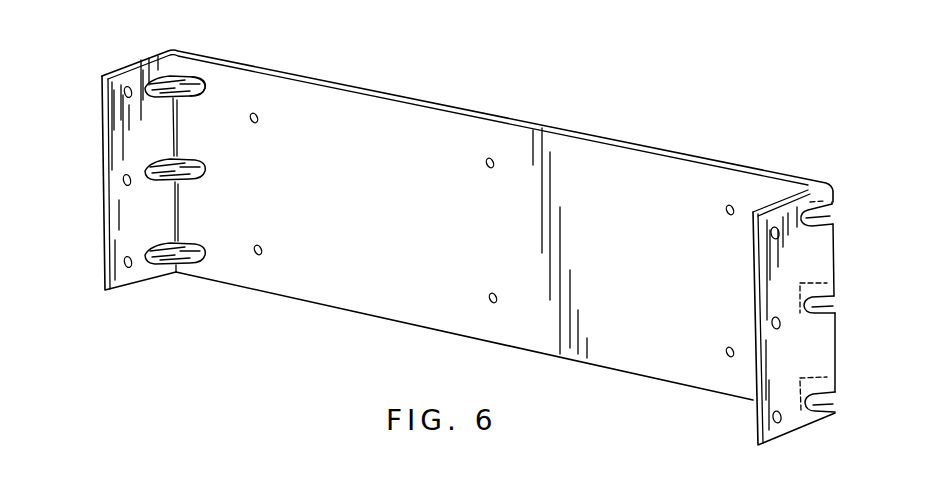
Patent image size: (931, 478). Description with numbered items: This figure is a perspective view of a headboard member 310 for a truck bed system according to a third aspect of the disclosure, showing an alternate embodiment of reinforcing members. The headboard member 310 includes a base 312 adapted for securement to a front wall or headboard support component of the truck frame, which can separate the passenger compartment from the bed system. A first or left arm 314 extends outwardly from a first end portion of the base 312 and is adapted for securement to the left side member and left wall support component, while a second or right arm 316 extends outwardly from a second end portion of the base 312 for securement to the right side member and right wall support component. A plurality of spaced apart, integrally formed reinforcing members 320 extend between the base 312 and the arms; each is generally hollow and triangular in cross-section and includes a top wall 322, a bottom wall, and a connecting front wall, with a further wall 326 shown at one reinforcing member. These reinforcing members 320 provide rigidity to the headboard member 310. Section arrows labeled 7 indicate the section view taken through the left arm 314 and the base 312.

The headboard member 310 is at (464, 233).
The base 312 is at (407, 127).
The first or left arm 314 is at (115, 141).
The second or right arm 316 is at (812, 348).
The reinforcing members 320 is at (200, 70).
The top wall 322 is at (182, 160).
The tab rounded end 326 is at (206, 90).
The section line 7- 7 is at (115, 268).